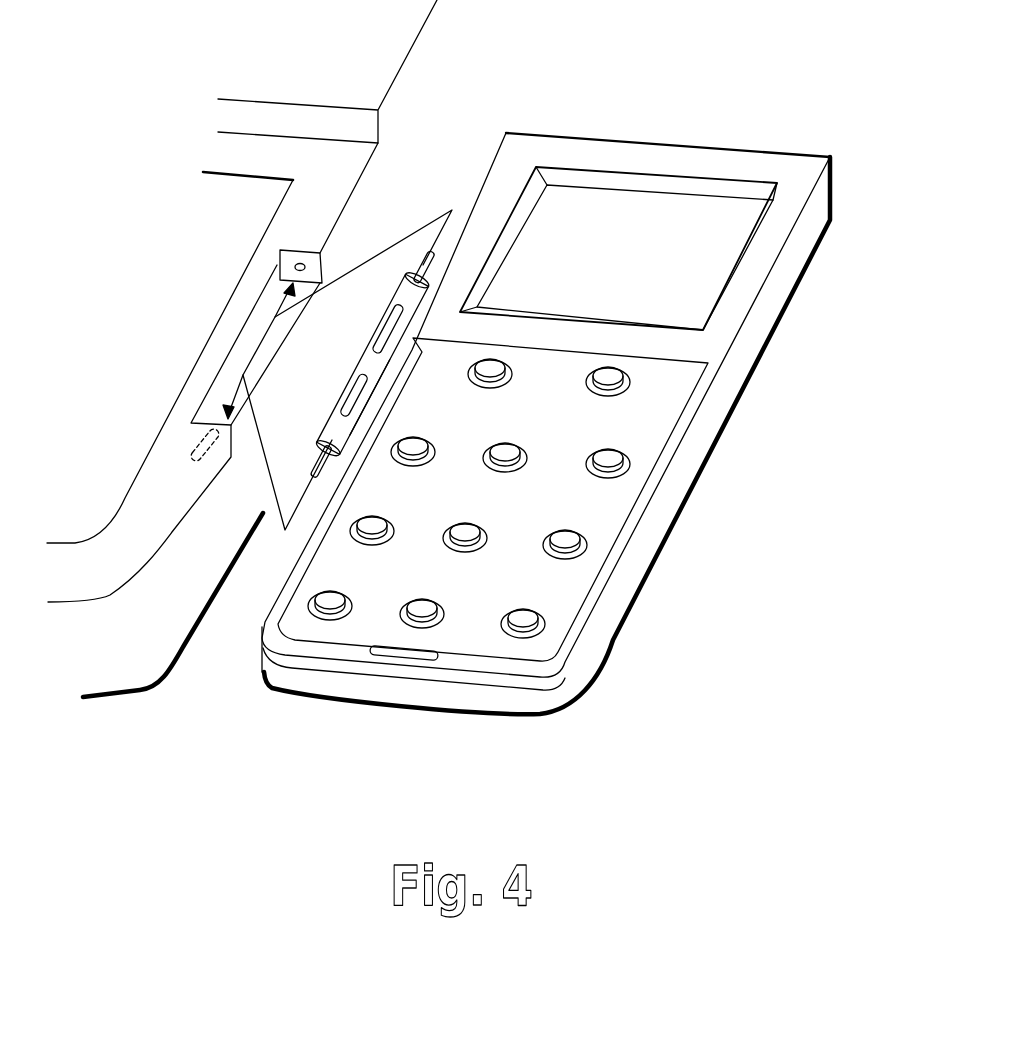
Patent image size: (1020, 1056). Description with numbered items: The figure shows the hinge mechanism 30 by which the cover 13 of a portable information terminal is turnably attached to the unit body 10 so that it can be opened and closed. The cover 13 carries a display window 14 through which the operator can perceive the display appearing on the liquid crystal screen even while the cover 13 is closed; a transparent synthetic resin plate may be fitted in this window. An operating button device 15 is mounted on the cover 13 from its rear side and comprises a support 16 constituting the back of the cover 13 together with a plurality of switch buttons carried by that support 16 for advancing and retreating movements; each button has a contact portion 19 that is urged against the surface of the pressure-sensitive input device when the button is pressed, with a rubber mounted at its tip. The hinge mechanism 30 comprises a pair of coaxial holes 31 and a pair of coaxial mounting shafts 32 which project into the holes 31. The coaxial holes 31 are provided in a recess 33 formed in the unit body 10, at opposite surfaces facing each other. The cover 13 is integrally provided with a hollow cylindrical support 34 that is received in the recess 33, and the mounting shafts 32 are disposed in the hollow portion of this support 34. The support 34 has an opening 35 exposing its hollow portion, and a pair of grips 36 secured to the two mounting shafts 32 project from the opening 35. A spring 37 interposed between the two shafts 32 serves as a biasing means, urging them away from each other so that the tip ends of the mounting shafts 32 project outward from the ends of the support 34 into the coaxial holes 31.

The unit body 10 is at (585, 374).
The cover 13 is at (822, 213).
The display window 14 is at (637, 183).
The operating button device 15 is at (664, 420).
The support 16 is at (627, 493).
The contact portion 19 is at (590, 390).
The hinge mechanism 30 is at (250, 348).
The coaxial holes 31 is at (296, 267).
The mounting shafts 32 is at (418, 266).
The recess 33 is at (238, 343).
The hollow cylindrical support 34 is at (347, 333).
The opening 35 is at (401, 350).
The grips 36 is at (350, 346).
The spring 37 is at (385, 387).